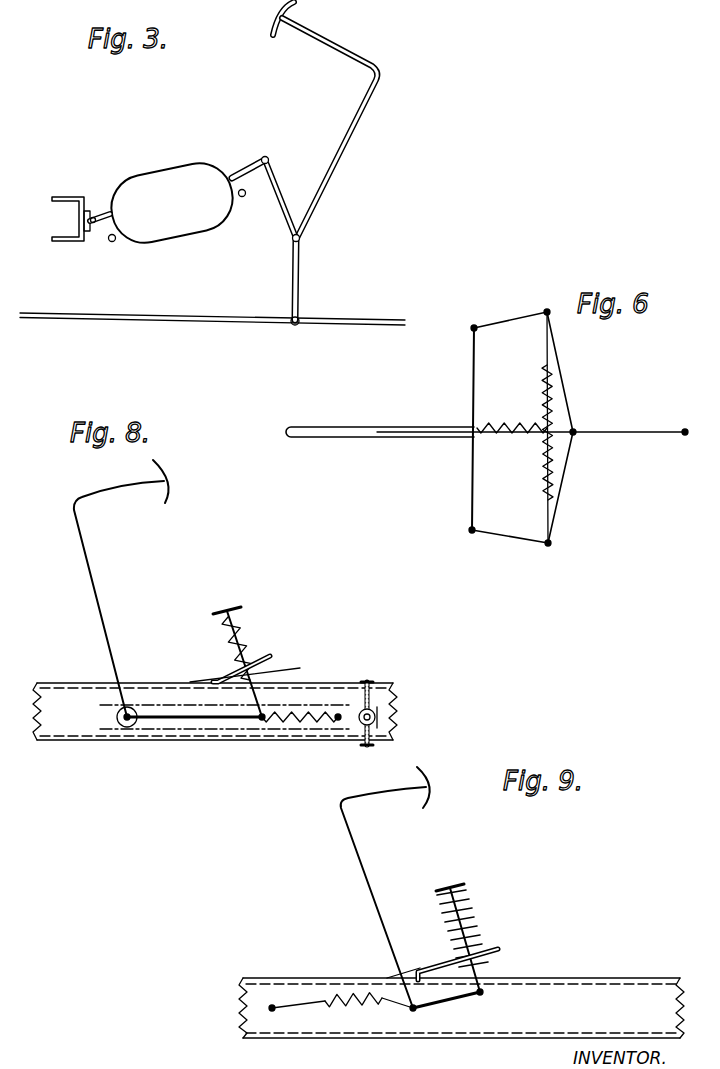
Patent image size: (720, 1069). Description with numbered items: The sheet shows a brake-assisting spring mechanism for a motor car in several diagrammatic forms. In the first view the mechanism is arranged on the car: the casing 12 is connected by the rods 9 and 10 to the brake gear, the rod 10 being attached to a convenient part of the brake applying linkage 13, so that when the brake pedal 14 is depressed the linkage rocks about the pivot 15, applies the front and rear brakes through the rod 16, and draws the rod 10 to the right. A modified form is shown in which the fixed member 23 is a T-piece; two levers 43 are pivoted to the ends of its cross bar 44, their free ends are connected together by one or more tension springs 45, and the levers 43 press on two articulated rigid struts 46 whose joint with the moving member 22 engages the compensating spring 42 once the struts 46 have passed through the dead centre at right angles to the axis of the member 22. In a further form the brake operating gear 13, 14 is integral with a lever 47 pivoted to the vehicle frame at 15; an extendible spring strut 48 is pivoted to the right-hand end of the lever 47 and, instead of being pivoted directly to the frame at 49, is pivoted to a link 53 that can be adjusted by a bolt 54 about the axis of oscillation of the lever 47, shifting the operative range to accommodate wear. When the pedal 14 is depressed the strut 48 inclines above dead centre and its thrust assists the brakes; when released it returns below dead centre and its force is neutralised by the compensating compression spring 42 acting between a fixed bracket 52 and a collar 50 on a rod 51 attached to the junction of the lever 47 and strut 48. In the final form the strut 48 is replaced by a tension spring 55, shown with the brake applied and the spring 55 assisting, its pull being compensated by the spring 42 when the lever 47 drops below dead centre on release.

In FIG. 3, the rod 9 is at (92, 214).
In FIG. 3, the rod 10 is at (240, 159).
In FIG. 3, the casing 12 is at (157, 171).
In FIG. 3, the brake applying linkage 13 is at (274, 184).
In FIG. 8, the brake applying linkage 13 is at (97, 613).
In FIG. 9, the brake applying linkage 13 is at (372, 905).
In FIG. 3, the brake pedal 14 is at (273, 17).
In FIG. 8, the brake pedal 14 is at (166, 480).
In FIG. 9, the brake pedal 14 is at (428, 787).
In FIG. 3, the pivot 15 is at (301, 238).
In FIG. 8, the pivot 15 is at (120, 727).
In FIG. 3, the rod 16 is at (180, 323).
In FIG. 6, the moving member 22 is at (654, 436).
In FIG. 6, the fixed member 23 is at (321, 423).
In FIG. 6, the compensating spring 42 is at (495, 424).
In FIG. 8, the compensating spring 42 is at (228, 637).
In FIG. 9, the compensating spring 42 is at (475, 912).
In FIG. 6, the levers 43 is at (490, 322).
In FIG. 6, the cross bar 44 is at (474, 364).
In FIG. 6, the tension springs 45 is at (549, 368).
In FIG. 6, the rigid struts 46 is at (568, 396).
In FIG. 8, the lever 47 is at (185, 720).
In FIG. 9, the lever 47 is at (452, 1000).
In FIG. 8, the extendible strut 48 is at (306, 722).
In FIG. 8, the vehicle frame pivot 49 is at (339, 711).
In FIG. 8, the collar 50 is at (225, 604).
In FIG. 9, the collar 50 is at (450, 888).
In FIG. 8, the rod 51 is at (257, 669).
In FIG. 9, the rod 51 is at (477, 971).
In FIG. 8, the fixed bracket 52 is at (271, 656).
In FIG. 9, the fixed bracket 52 is at (499, 949).
In FIG. 8, the link 53 is at (225, 724).
In FIG. 9, the link 53 is at (461, 1008).
In FIG. 8, the bolt 54 is at (373, 695).
In FIG. 9, the tension spring 55 is at (360, 1005).